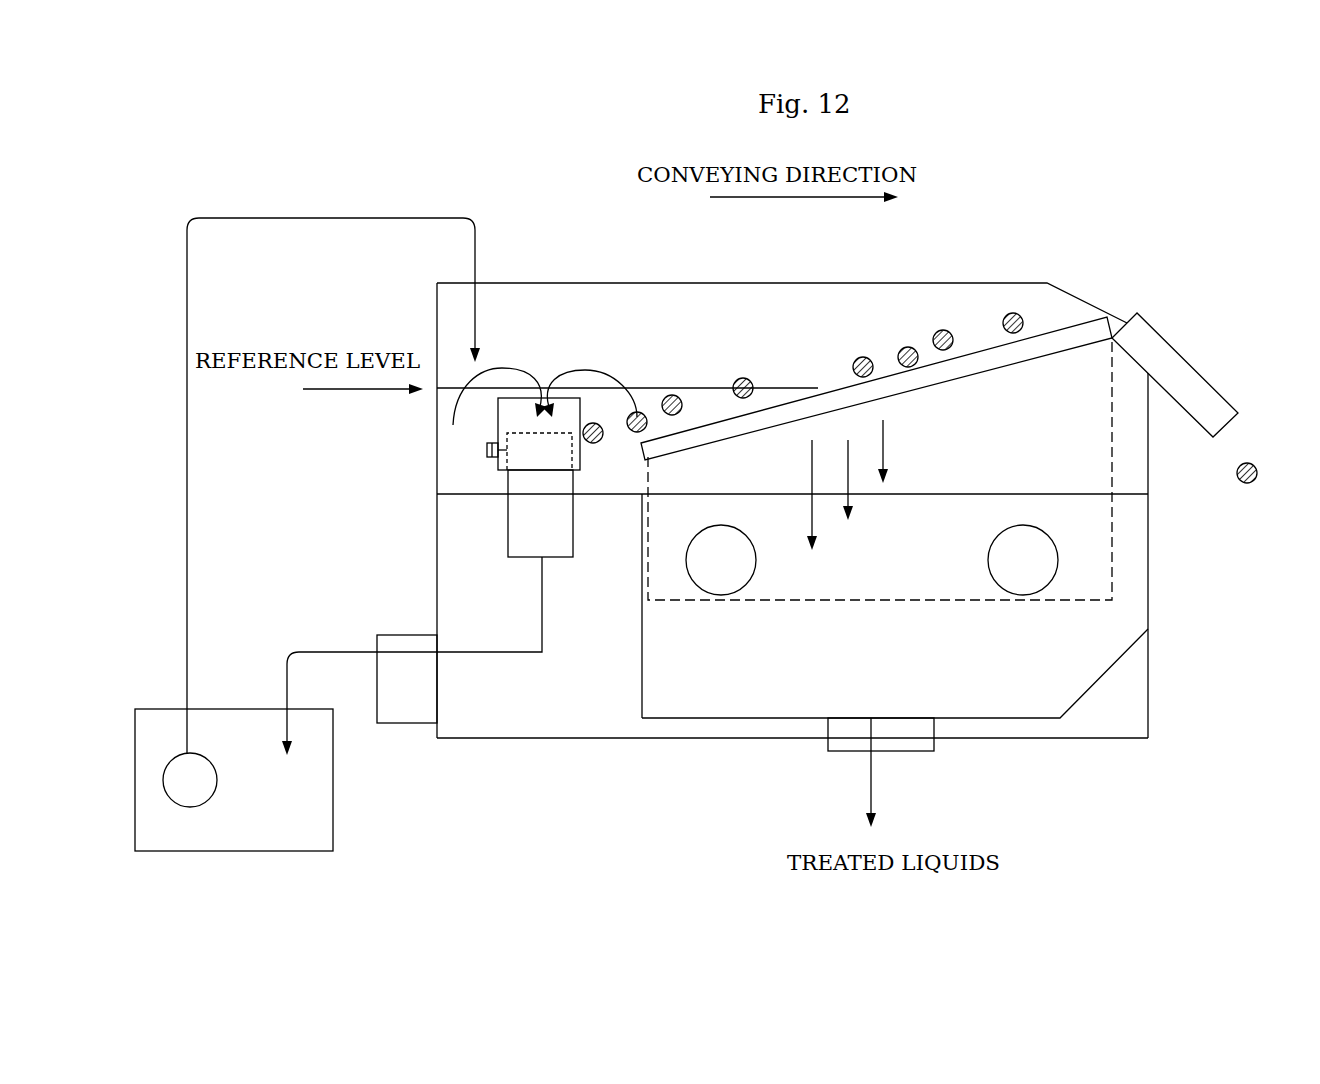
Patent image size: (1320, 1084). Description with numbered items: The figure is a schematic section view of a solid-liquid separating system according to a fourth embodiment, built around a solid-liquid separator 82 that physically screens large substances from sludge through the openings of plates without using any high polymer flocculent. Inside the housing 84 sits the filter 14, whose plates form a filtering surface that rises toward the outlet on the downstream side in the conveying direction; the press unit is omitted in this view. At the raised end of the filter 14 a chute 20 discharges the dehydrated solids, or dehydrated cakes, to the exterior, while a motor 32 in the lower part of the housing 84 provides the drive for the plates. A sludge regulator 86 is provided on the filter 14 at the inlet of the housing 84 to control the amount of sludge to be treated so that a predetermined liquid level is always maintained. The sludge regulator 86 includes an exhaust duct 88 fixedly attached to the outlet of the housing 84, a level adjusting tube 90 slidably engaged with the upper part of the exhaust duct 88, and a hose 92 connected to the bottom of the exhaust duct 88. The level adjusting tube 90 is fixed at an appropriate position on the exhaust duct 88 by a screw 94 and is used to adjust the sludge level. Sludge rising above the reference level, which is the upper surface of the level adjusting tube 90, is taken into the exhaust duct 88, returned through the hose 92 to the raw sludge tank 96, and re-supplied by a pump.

The solid-liquid separator 82 is at (1003, 258).
The housing 84 is at (1148, 605).
The motor 32 is at (1058, 556).
The filter 14 is at (1085, 312).
The chute 20 is at (1188, 360).
The level adjusting tube 90 is at (583, 413).
The sludge regulator 86 is at (470, 514).
The exhaust duct 88 is at (574, 545).
The screw 94 is at (487, 450).
The hose 92 is at (507, 652).
The raw sludge tank 96 is at (333, 773).